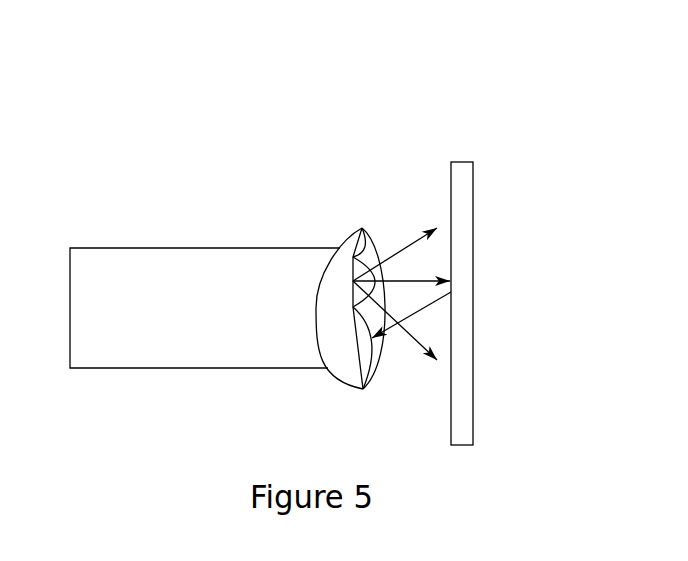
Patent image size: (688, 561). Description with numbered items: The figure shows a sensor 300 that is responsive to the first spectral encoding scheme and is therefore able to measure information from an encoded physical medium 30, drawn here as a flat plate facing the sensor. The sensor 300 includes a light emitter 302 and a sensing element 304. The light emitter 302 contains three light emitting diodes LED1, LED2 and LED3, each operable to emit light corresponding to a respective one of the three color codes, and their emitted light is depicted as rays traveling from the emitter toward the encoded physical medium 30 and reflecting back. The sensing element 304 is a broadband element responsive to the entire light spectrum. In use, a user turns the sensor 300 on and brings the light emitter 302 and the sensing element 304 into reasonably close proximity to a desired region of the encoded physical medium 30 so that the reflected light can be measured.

The sensor 300 is at (105, 247).
The light emitter 302 is at (318, 282).
The sensing element 304 is at (375, 380).
The encoded physical medium 30 is at (473, 190).
The light emitting diode LED1 is at (380, 272).
The light emitting diode LED2 is at (395, 278).
The light emitting diode LED3 is at (427, 226).